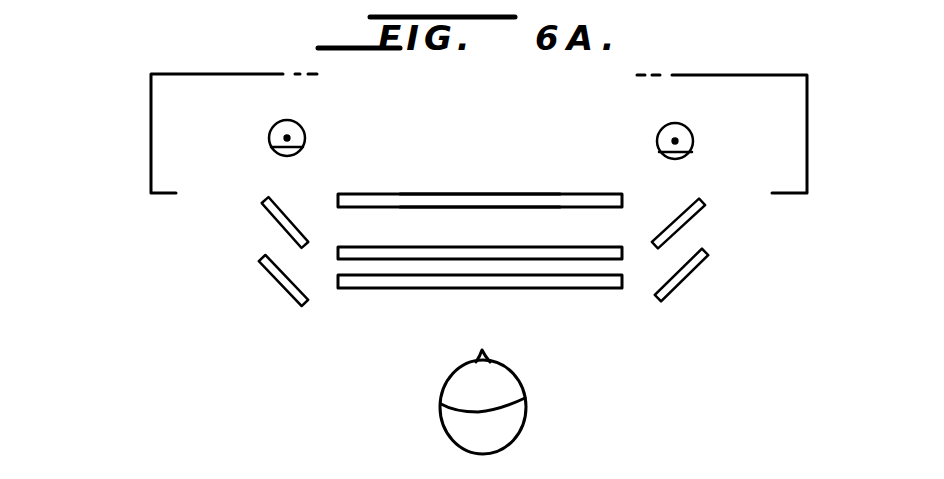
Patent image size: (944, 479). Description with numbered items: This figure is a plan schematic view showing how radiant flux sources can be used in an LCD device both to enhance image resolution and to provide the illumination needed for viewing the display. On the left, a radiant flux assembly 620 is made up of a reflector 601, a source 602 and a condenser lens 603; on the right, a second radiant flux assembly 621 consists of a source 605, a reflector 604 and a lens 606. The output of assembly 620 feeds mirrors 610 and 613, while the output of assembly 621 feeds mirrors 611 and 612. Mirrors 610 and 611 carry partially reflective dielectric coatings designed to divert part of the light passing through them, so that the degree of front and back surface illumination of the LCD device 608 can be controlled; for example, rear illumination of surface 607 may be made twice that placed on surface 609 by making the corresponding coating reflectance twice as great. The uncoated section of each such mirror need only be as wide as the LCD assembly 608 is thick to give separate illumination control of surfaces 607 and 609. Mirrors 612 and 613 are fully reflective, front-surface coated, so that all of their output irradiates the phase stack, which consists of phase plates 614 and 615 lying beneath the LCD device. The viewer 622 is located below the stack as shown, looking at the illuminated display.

The reflector 601 is at (277, 123).
The source 602 is at (270, 139).
The condenser lens 603 is at (278, 156).
The reflector 604 is at (686, 125).
The source 605 is at (678, 141).
The lens 606 is at (690, 158).
The rear illumination surface 607 is at (458, 172).
The LCD device 608 is at (577, 165).
The front illumination surface 609 is at (420, 208).
The mirror 610 is at (278, 222).
The mirror 611 is at (683, 222).
The mirror 612 is at (685, 280).
The mirror 613 is at (275, 278).
The phase plate 614 is at (530, 259).
The phase plate 615 is at (437, 288).
The radiant flux assembly 620 is at (151, 133).
The radiant flux assembly 621 is at (807, 136).
The viewer 622 is at (525, 392).